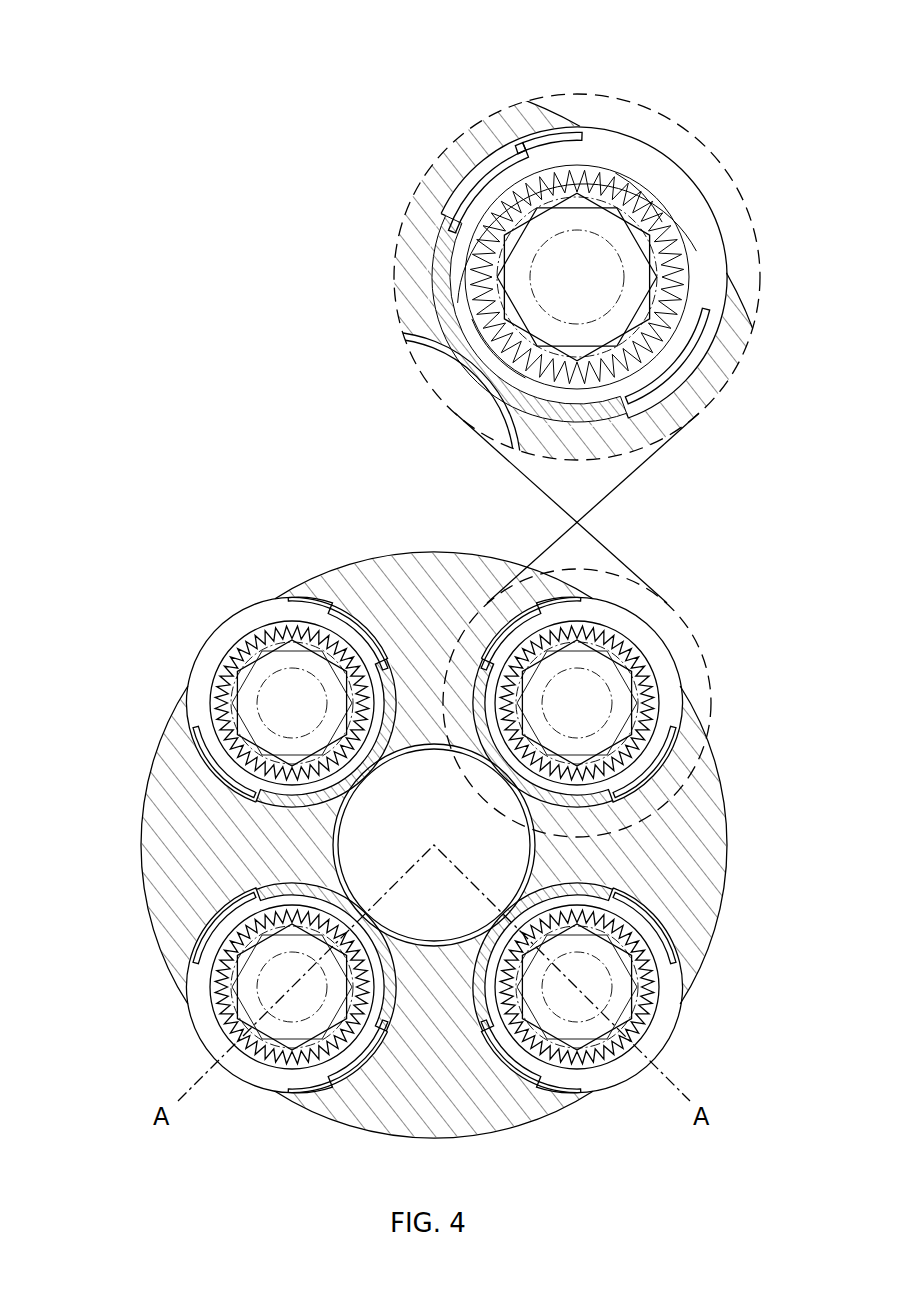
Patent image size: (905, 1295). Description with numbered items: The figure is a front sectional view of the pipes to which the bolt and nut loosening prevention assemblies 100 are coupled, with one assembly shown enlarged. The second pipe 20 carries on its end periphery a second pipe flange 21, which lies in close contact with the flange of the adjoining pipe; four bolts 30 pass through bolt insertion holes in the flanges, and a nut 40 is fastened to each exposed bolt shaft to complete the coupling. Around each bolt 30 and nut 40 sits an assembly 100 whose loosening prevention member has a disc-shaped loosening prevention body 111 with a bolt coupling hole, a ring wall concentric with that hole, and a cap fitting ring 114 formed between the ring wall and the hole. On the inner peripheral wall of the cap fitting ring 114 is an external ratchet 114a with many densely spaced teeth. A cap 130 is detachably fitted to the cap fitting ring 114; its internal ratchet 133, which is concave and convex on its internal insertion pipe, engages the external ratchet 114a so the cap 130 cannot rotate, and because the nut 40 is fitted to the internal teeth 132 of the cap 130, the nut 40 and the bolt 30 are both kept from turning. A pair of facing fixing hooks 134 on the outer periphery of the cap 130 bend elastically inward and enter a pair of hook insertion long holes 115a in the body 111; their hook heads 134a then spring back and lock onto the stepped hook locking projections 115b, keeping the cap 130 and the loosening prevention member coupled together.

The bolt and nut loosening prevention assembly 100 is at (183, 594).
The second pipe 20 is at (333, 832).
The second pipe flange 21 is at (178, 877).
The bolt 30 is at (250, 695).
The nut 40 is at (577, 277).
The loosening prevention body 111 is at (440, 282).
The cap fitting ring 114 is at (497, 357).
The external ratchet 114a is at (627, 175).
The hook insertion long hole 115a is at (655, 405).
The hook locking projection 115b is at (460, 213).
The cap 130 is at (552, 160).
The internal teeth 132 is at (673, 247).
The internal ratchet 133 is at (585, 170).
The fixing hook 134 is at (477, 188).
The hook head 134a is at (470, 182).